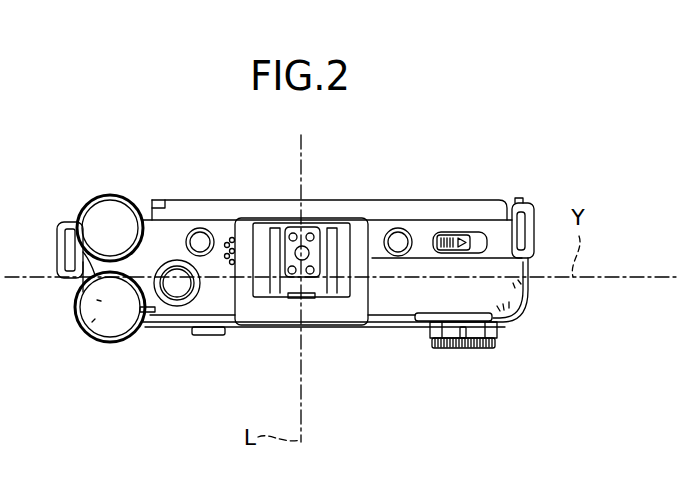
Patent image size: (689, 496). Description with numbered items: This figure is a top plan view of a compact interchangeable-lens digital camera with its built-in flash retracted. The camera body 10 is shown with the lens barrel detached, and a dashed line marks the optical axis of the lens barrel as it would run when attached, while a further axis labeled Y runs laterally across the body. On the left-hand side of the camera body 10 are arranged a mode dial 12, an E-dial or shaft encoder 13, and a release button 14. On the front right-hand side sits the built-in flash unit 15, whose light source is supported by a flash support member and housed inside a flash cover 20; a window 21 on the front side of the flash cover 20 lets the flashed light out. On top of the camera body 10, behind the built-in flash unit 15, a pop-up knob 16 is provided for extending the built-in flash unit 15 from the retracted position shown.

The camera body 10 is at (348, 412).
The mode dial 12 is at (102, 338).
The E-dial or shaft encoder 13 is at (107, 218).
The release button 14 is at (178, 292).
The built-in flash unit 15 is at (495, 295).
The pop-up knob 16 is at (447, 238).
The flash cover 20 is at (402, 306).
The window 21 is at (430, 322).